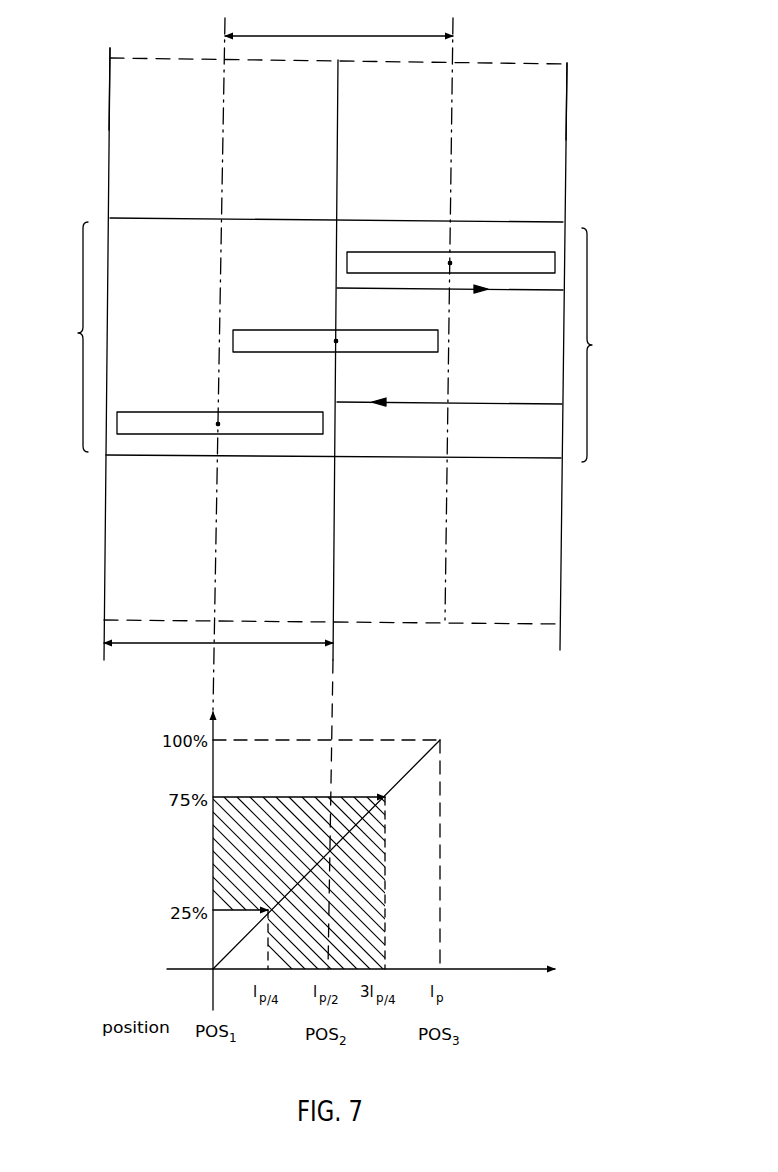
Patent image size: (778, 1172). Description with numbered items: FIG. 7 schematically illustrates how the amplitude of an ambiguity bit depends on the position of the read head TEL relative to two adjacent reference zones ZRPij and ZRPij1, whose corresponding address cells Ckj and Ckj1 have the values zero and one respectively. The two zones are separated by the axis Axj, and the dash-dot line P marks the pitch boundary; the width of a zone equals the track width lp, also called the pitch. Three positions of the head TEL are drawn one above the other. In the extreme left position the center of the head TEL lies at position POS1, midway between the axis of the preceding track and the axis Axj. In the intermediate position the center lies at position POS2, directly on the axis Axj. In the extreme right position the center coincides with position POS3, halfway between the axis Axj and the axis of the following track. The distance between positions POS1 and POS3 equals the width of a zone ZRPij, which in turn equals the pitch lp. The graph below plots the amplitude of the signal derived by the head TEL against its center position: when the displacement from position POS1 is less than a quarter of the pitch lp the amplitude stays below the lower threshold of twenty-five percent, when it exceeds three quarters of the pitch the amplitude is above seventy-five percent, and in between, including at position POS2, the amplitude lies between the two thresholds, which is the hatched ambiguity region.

The reference zone ZRPij is at (110, 117).
The adjacent reference zone ZRPij1 is at (567, 135).
The axis Axj is at (338, 140).
The pitch line P is at (422, 535).
The track width (pitch) lp is at (278, 344).
The head TEL is at (323, 424).
The extreme left position POS1 is at (222, 393).
The intermediate position POS2 is at (334, 342).
The extreme right position POS3 is at (449, 262).
The address cell Ckj is at (59, 337).
The address cell of adjacent zone Ckj1 is at (618, 345).